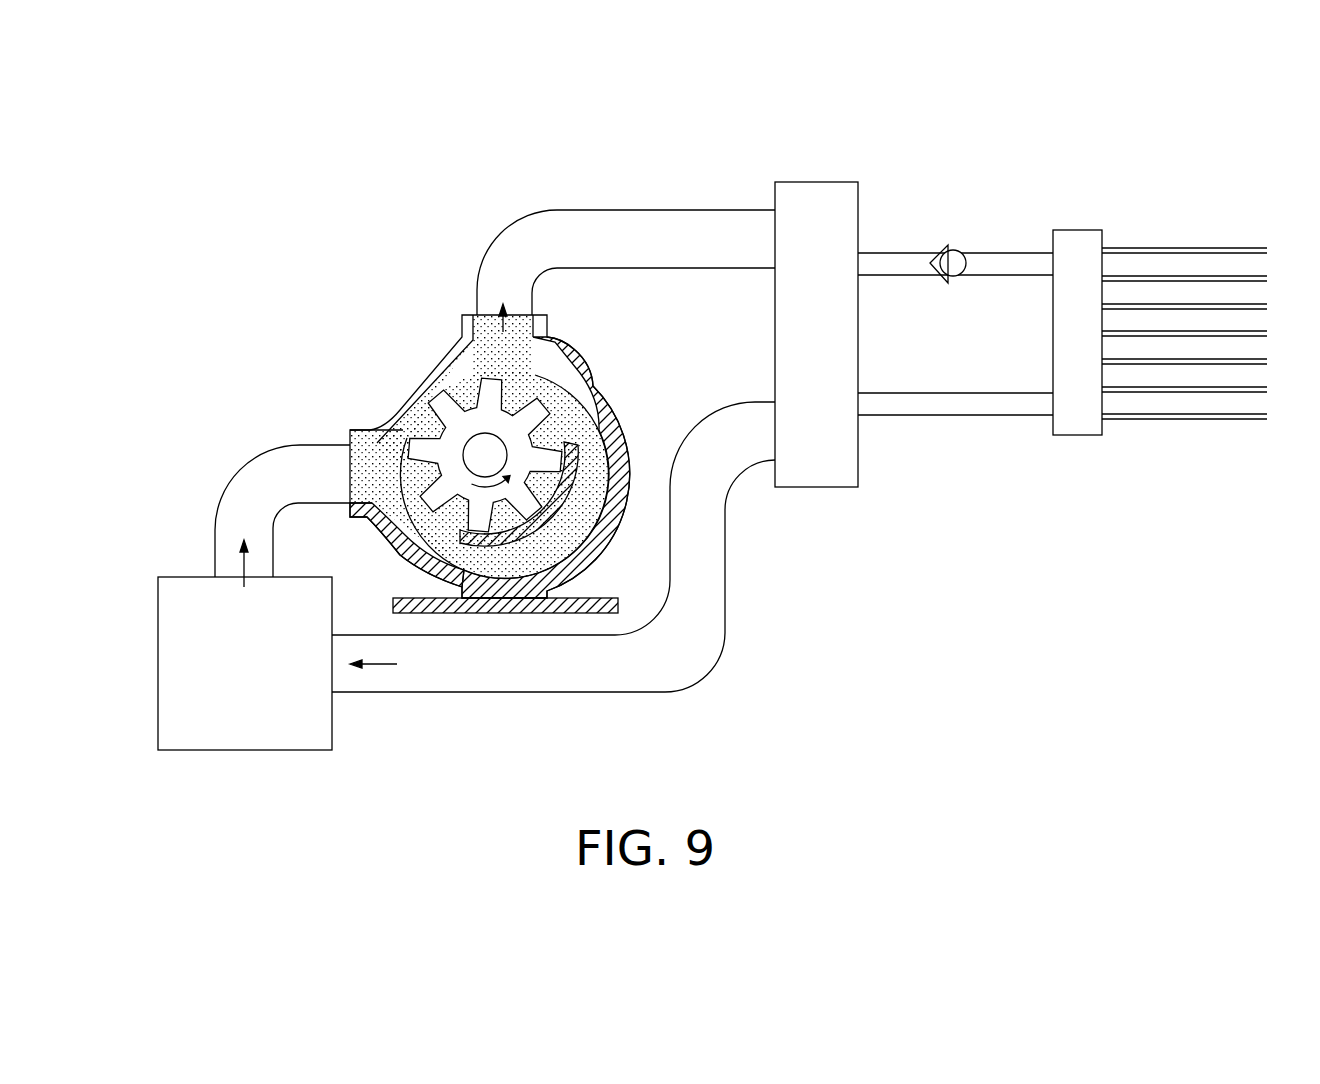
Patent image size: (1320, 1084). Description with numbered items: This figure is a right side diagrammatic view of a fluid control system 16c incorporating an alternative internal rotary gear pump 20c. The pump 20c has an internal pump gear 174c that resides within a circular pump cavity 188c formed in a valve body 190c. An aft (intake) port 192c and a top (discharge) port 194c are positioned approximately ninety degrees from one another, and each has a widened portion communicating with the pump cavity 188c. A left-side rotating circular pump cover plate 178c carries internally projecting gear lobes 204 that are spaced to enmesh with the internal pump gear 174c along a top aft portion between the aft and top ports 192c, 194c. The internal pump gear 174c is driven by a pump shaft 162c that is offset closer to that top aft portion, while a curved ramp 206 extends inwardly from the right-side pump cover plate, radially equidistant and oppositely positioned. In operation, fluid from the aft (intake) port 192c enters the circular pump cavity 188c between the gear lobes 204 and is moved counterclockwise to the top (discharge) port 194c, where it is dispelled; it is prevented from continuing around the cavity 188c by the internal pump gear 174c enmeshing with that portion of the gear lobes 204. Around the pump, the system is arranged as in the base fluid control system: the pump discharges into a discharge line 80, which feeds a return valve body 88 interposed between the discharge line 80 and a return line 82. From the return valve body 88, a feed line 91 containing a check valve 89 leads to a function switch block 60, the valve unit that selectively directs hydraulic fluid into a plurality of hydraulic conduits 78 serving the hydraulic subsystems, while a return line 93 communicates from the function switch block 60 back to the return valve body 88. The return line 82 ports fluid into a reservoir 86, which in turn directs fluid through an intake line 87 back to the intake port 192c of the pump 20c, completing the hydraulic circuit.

The fluid control system 16c is at (904, 177).
The internal rotary gear pump 20c is at (514, 487).
The function switch block 60 is at (1078, 230).
The hydraulic conduits 78 is at (1125, 432).
The discharge line 80 is at (670, 210).
The return line 82 is at (727, 622).
The reservoir 86 is at (292, 752).
The intake line 87 is at (315, 443).
The return valve body 88 is at (820, 182).
The check valve 89 is at (963, 228).
The feed line 91 is at (1000, 252).
The return line 93 is at (955, 415).
The pump shaft 162c is at (478, 462).
The internal pump gear 174c is at (470, 440).
The rotating circular pump cover plate 178c is at (590, 443).
The circular pump cavity 188c is at (597, 492).
The valve body 190c is at (617, 440).
The aft (intake) port 192c is at (349, 441).
The top (discharge) port 194c is at (522, 313).
The gear lobes 204 is at (578, 363).
The curved ramp 206 is at (515, 553).